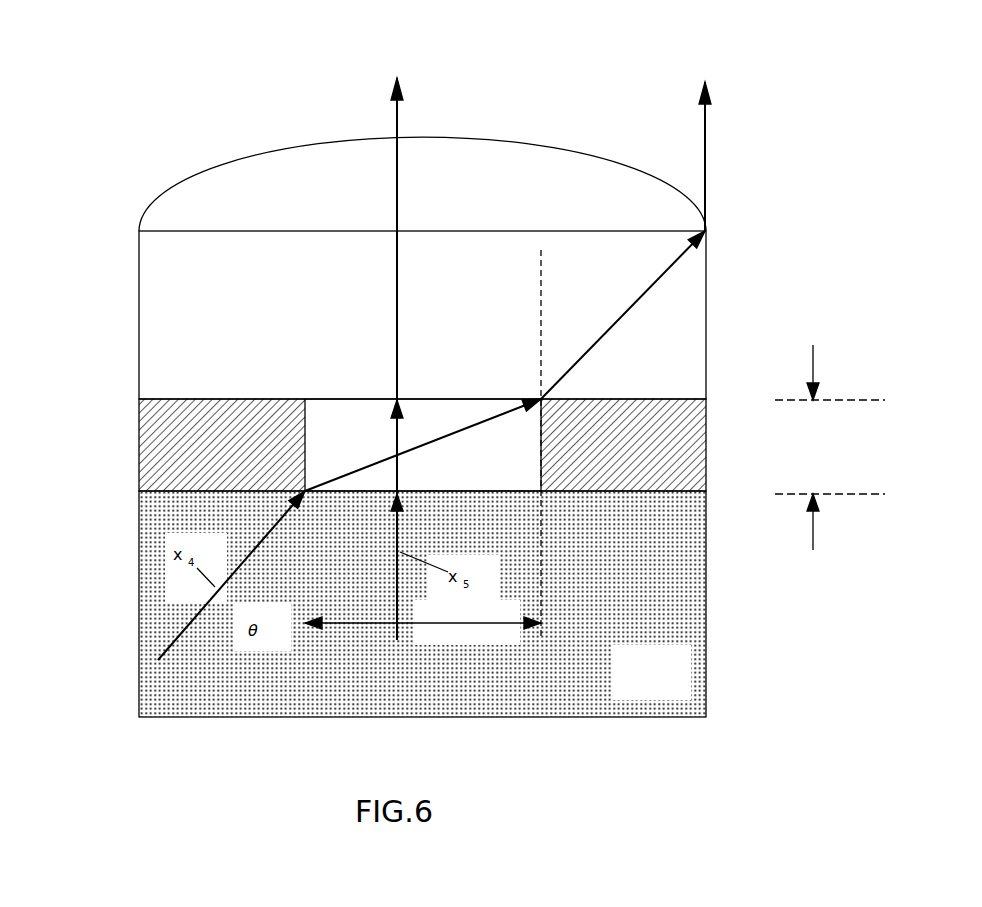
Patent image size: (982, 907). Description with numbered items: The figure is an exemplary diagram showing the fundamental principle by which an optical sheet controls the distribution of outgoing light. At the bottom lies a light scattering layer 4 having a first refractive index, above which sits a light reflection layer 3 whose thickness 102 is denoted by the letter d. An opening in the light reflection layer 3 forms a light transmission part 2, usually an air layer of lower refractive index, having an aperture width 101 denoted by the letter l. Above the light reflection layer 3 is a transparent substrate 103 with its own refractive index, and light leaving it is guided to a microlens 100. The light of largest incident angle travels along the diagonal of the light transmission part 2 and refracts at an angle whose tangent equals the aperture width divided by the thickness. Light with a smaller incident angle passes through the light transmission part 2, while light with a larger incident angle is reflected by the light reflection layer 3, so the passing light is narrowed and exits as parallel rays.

The light transmission part 2 is at (360, 417).
The light reflection layer 3 is at (139, 453).
The light scattering layer 4 is at (707, 643).
The microlens 100 is at (222, 163).
The aperture width 101 is at (423, 627).
The thickness of light reflection layer 102 is at (830, 447).
The transparent substrate 103 is at (158, 323).